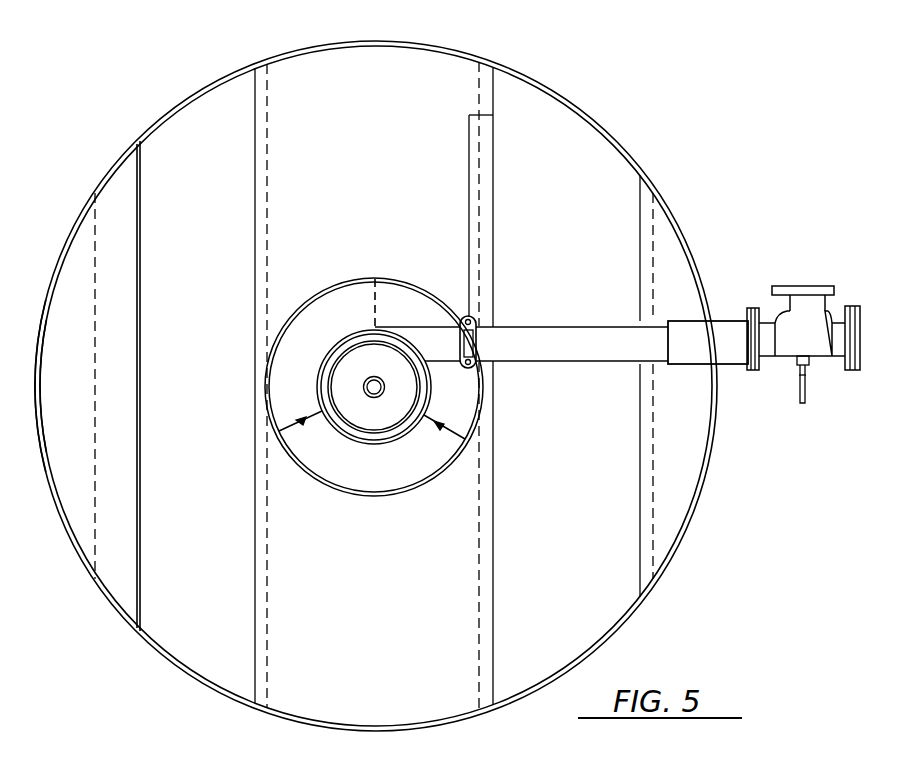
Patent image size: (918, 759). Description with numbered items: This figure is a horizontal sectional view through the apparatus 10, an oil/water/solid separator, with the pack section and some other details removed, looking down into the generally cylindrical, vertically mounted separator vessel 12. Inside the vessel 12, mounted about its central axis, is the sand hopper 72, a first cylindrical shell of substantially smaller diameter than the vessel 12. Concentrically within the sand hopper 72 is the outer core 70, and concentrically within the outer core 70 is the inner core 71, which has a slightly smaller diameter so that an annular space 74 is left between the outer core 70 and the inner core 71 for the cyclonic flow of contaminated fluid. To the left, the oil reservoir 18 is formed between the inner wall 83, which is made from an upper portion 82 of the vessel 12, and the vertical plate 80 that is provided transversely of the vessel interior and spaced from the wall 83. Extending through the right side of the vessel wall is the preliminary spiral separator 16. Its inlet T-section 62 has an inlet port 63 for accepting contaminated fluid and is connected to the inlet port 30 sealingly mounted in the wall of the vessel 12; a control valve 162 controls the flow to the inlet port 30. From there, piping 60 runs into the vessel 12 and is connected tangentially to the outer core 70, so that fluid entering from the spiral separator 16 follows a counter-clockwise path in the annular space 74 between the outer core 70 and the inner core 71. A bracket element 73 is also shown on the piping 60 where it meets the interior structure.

The apparatus 10 is at (559, 65).
The separator vessel 12 is at (376, 41).
The preliminary spiral separator 16 is at (729, 302).
The oil reservoir 18 is at (124, 190).
The inlet port 30 is at (752, 371).
The piping 60 is at (506, 362).
The inlet T-section 62 is at (829, 311).
The inlet port 63 is at (785, 287).
The outer core 70 is at (342, 446).
The inner core 71 is at (348, 330).
The sand hopper 72 is at (413, 487).
The bracket fitting 73 is at (460, 308).
The annular space 74 is at (321, 391).
The vertical plate 80 is at (141, 245).
The upper portion of vessel 82 is at (36, 345).
The inner wall 83 is at (40, 364).
The control valve 162 is at (807, 382).